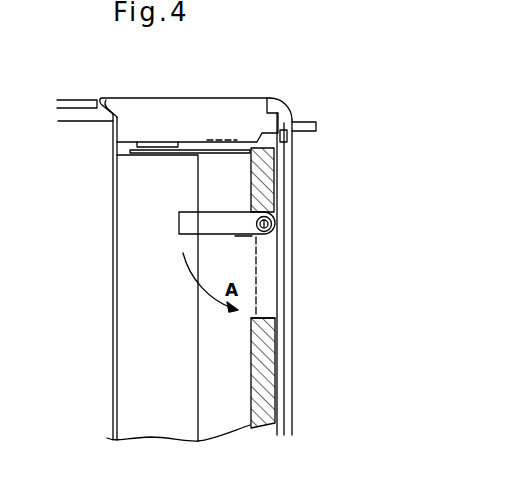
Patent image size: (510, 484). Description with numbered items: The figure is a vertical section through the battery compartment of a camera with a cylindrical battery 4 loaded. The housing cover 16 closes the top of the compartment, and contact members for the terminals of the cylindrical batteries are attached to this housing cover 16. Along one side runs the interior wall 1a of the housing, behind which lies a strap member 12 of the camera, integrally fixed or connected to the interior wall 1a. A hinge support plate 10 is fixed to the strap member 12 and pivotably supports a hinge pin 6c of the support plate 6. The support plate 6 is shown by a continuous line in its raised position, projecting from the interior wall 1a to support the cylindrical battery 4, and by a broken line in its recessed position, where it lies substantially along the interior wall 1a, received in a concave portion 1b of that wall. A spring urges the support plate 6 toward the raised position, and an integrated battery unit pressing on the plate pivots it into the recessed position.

The housing cover 16 is at (207, 115).
The hinge support plate 10 is at (272, 198).
The support plate 6 is at (228, 226).
The hinge pin 6c is at (272, 225).
The interior wall 1a is at (260, 343).
The concave portion 1b is at (263, 317).
The strap member 12 is at (280, 397).
The cylindrical battery 4 is at (215, 330).